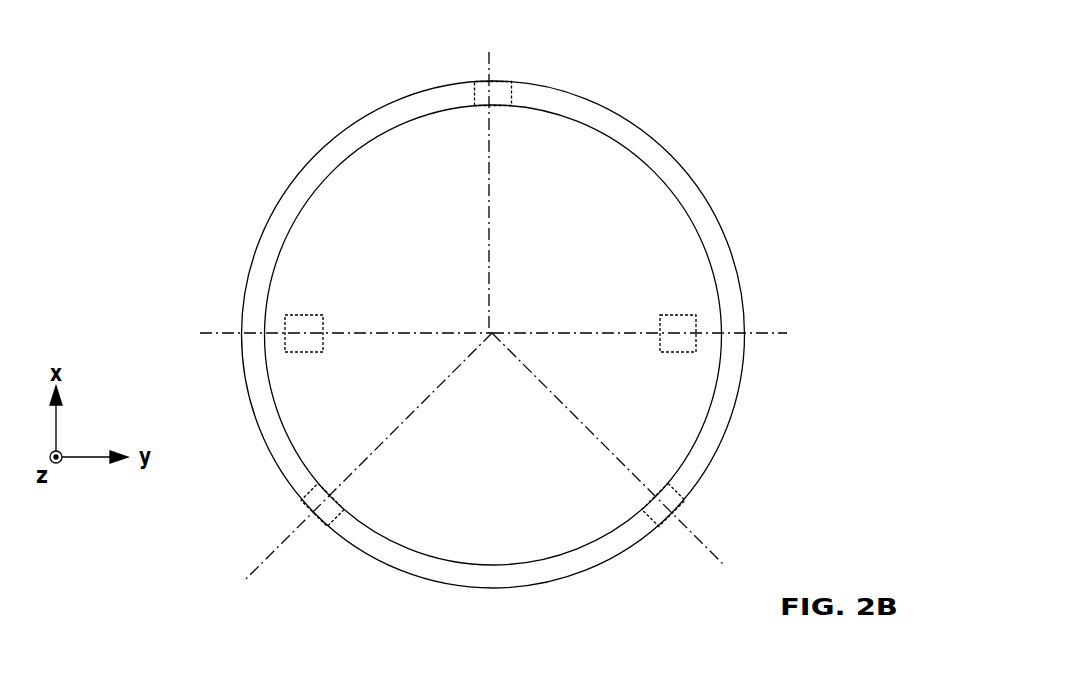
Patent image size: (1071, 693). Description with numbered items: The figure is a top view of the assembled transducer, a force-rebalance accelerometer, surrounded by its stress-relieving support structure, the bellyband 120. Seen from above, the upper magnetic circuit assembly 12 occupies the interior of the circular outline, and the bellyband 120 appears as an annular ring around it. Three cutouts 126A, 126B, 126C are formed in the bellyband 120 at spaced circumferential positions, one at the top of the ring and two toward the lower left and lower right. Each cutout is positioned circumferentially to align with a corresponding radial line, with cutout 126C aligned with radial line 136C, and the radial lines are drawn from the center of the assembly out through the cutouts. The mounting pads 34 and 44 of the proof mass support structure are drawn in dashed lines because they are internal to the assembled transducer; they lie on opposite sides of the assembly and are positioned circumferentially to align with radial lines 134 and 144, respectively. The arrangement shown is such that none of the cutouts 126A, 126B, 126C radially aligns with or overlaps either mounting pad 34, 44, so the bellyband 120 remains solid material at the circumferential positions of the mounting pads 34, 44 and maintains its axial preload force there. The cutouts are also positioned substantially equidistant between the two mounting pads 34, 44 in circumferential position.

The upper magnetic circuit assembly 12 is at (452, 200).
The bellyband 120 is at (713, 435).
The cutout 126A is at (310, 503).
The cutout 126B is at (488, 84).
The cutout 126C is at (662, 520).
The radial line 136C is at (488, 208).
The radial line 144 is at (415, 333).
The radial line 134 is at (555, 333).
The mounting pad 44 is at (308, 314).
The mounting pad 34 is at (675, 325).